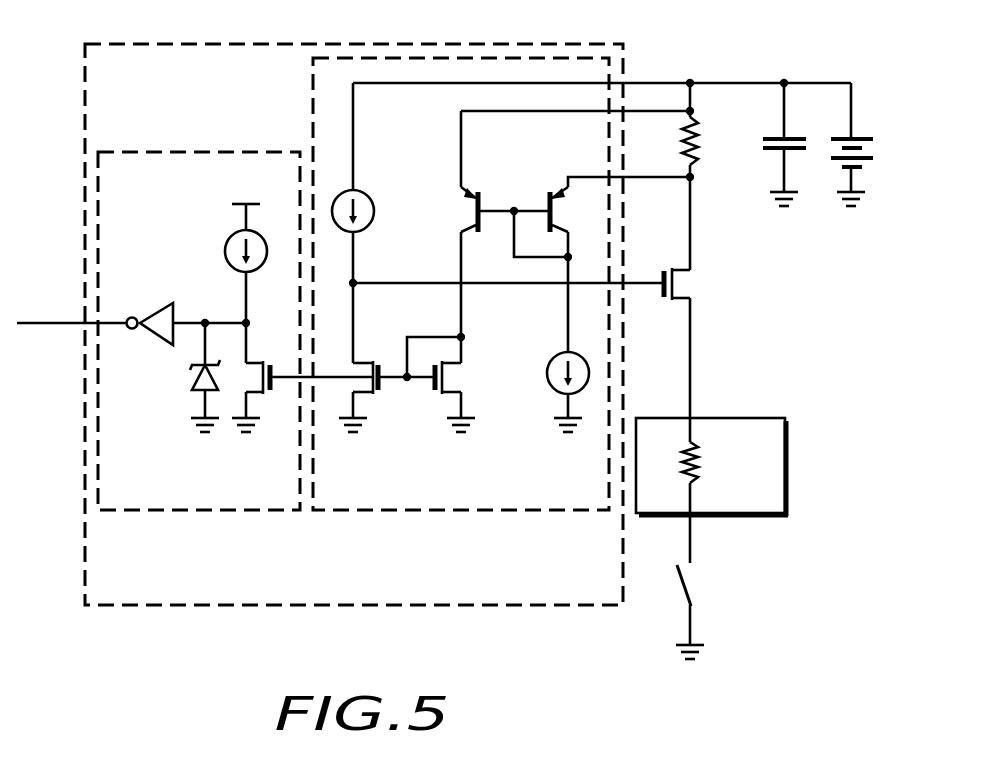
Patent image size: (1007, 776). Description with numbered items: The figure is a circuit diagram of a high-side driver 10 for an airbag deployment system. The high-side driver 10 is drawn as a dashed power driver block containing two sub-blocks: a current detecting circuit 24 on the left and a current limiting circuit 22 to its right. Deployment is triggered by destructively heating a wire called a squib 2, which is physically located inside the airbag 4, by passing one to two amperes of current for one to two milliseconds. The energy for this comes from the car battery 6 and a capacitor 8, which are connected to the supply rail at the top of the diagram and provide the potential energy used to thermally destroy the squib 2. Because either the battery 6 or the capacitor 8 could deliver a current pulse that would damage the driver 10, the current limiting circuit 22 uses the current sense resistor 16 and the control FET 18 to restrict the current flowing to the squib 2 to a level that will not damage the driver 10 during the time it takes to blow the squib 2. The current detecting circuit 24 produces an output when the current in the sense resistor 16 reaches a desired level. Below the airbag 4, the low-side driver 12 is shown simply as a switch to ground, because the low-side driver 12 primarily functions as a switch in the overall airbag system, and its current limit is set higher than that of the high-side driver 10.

The squib 2 is at (683, 455).
The airbag 4 is at (788, 478).
The car battery 6 is at (862, 133).
The capacitor 8 is at (793, 133).
The high-side driver 10 is at (461, 591).
The low-side driver 12 is at (677, 587).
The current sense resistor 16 is at (700, 129).
The control FET 18 is at (683, 283).
The current limiting circuit 22 is at (536, 512).
The current detecting circuit 24 is at (186, 512).